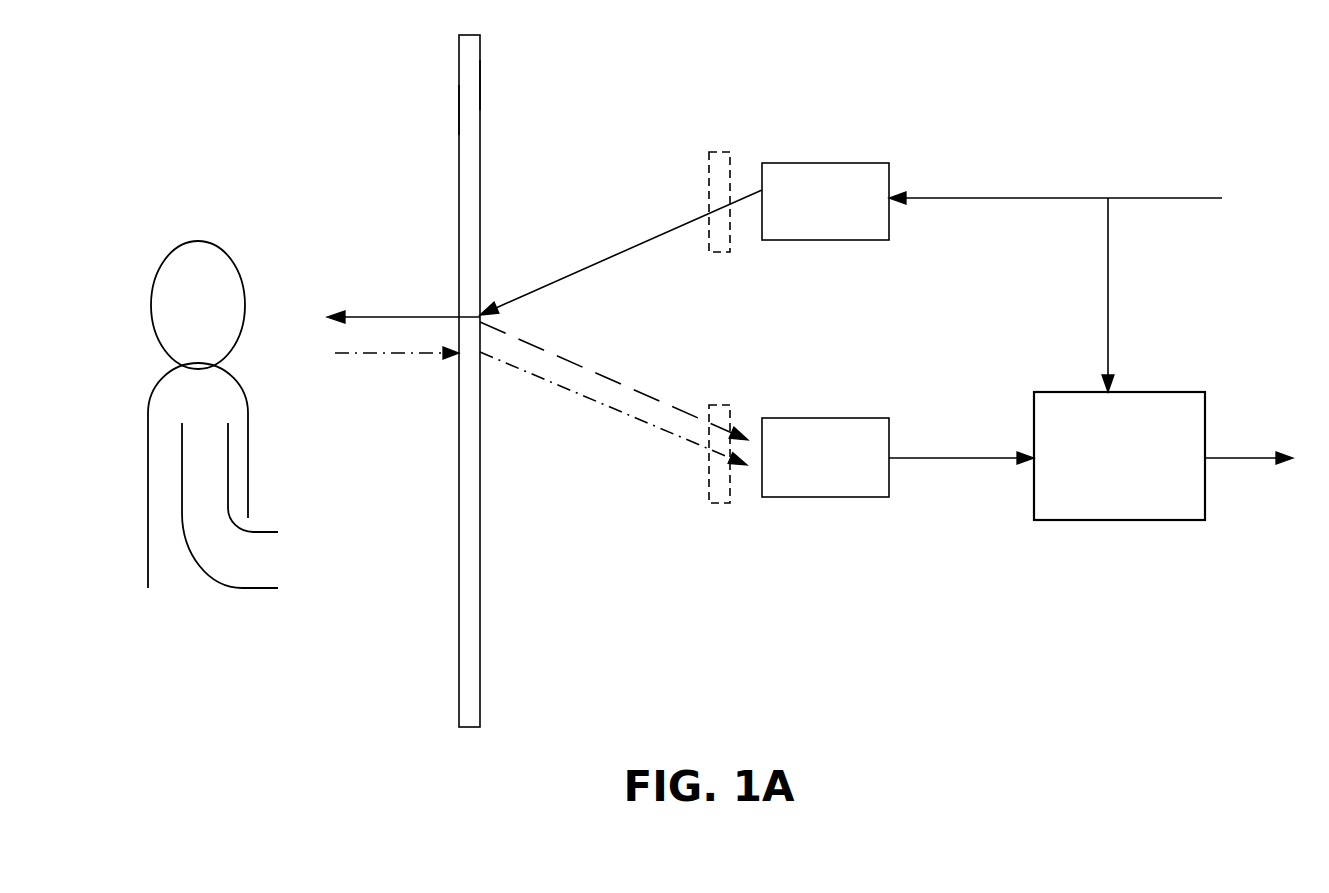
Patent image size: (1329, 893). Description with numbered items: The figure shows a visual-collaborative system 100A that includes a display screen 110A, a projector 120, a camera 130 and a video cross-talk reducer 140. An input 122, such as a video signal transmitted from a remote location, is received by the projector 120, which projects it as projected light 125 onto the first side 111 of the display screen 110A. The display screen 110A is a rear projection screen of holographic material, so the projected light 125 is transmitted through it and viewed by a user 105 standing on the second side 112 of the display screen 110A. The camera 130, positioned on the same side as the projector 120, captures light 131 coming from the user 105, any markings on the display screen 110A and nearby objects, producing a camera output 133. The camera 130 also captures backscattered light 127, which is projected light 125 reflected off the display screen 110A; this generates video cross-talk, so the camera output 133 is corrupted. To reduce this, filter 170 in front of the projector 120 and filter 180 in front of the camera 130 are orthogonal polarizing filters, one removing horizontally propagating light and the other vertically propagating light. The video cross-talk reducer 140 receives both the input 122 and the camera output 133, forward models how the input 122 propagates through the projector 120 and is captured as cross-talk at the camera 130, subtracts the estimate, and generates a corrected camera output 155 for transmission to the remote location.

The visual-collaborative system 100A is at (172, 49).
The user 105 is at (198, 241).
The display screen 110A is at (461, 37).
The first side 111 is at (481, 83).
The second side 112 is at (460, 108).
The projector 120 is at (825, 163).
The input 122 is at (1105, 177).
The projected light 125 is at (647, 238).
The backscattered light 127 is at (587, 370).
The camera 130 is at (812, 497).
The light 131 is at (360, 355).
The camera output 133 is at (941, 442).
The video cross-talk reducer 140 is at (1103, 493).
The corrected camera output 155 is at (1235, 442).
The filter 170 is at (715, 143).
The filter 180 is at (717, 505).